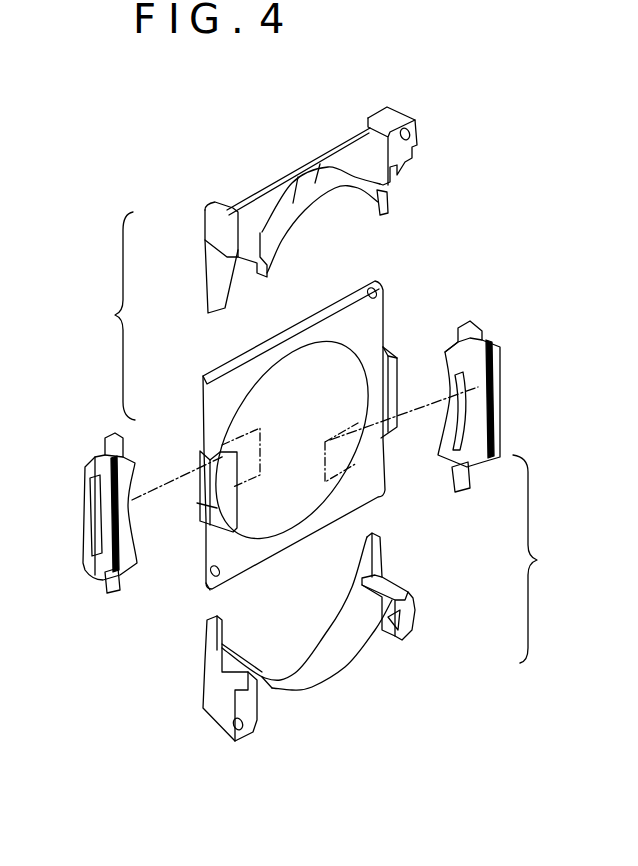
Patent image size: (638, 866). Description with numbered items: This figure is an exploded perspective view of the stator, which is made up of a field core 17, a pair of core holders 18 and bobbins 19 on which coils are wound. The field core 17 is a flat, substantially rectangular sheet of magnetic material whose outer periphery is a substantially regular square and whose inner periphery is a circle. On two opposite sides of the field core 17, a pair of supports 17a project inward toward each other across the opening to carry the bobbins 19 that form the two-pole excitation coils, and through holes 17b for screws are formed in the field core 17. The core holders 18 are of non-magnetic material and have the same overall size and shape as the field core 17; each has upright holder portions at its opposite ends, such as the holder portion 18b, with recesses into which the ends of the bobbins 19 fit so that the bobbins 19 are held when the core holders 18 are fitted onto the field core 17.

The field core 17 is at (294, 331).
The supports 17a is at (393, 378).
The through holes 17b is at (383, 290).
The core holders 18 is at (272, 197).
The holder portion 18b is at (415, 130).
The bobbins 19 is at (88, 500).